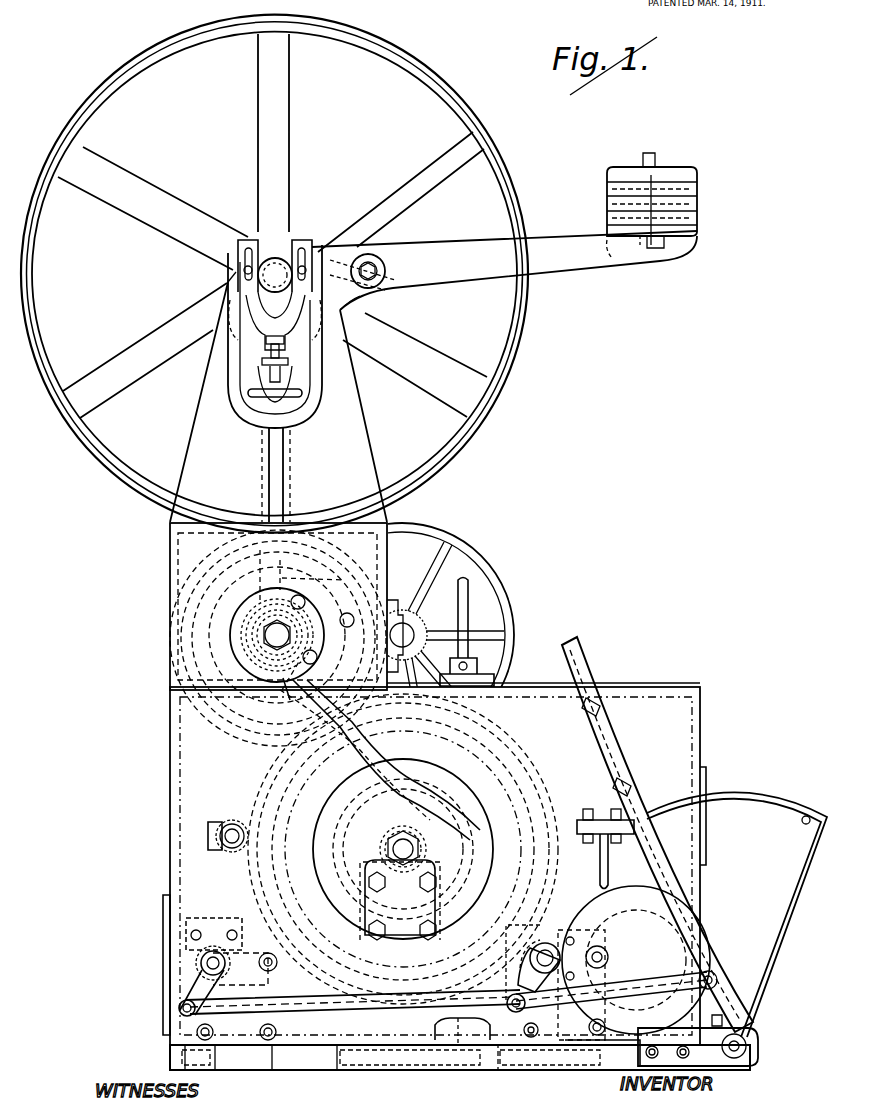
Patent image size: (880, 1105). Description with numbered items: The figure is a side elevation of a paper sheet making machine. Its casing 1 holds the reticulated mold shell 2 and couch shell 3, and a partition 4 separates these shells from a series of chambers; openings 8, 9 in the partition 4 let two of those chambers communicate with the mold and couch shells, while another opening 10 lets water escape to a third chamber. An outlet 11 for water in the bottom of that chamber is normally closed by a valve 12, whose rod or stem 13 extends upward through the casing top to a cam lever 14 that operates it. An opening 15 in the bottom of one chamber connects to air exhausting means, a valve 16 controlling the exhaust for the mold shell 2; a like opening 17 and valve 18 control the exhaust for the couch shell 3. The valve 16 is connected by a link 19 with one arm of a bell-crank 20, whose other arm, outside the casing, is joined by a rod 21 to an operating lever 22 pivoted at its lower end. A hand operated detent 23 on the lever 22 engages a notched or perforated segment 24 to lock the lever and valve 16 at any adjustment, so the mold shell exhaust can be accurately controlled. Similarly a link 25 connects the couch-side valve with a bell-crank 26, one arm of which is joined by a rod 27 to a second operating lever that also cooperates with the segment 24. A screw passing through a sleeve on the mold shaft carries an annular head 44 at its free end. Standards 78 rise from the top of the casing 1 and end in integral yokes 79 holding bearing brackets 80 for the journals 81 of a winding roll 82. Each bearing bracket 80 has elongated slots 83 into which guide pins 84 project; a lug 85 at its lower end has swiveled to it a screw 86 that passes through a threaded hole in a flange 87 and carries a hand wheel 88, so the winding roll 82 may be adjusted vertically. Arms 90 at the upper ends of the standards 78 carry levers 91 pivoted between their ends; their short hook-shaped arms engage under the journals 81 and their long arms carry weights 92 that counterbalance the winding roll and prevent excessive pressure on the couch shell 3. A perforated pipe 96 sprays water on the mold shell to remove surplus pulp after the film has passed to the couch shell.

The casing 1 is at (676, 726).
The mold shell 2 is at (540, 776).
The couch shell 3 is at (185, 598).
The partition 4 is at (548, 942).
The opening 8 is at (403, 834).
The opening 9 is at (292, 600).
The opening 10 is at (400, 917).
The outlet 11 is at (469, 1070).
The valve 12 is at (446, 1040).
The rod or stem 13 is at (470, 795).
The cam lever 14 is at (468, 606).
The opening 15 is at (602, 1058).
The valve 16 is at (565, 1045).
The opening 17 is at (270, 1066).
The valve 18 is at (231, 979).
The link 19 is at (562, 1002).
The bell-crank 20 is at (528, 935).
The rod 21 is at (530, 998).
The operating lever 22 is at (700, 965).
The hand operated detent 23 is at (640, 818).
The notched or perforated segment 24 is at (750, 806).
The link 25 is at (262, 988).
The bell-crank 26 is at (188, 978).
The rod 27 is at (312, 1003).
The annular head 44 is at (388, 836).
The standards 78 is at (278, 397).
The yokes 79 is at (322, 345).
The bearing brackets 80 is at (300, 240).
The journals 81 is at (275, 260).
The winding roll 82 is at (436, 92).
The elongated slots 83 is at (238, 250).
The guide pins 84 is at (240, 270).
The lug 85 is at (266, 342).
The screw 86 is at (280, 352).
The flange 87 is at (312, 388).
The hand wheel 88 is at (268, 398).
The arms 90 is at (380, 292).
The levers 91 is at (568, 264).
The weights 92 is at (607, 186).
The perforated pipe 96 is at (232, 820).